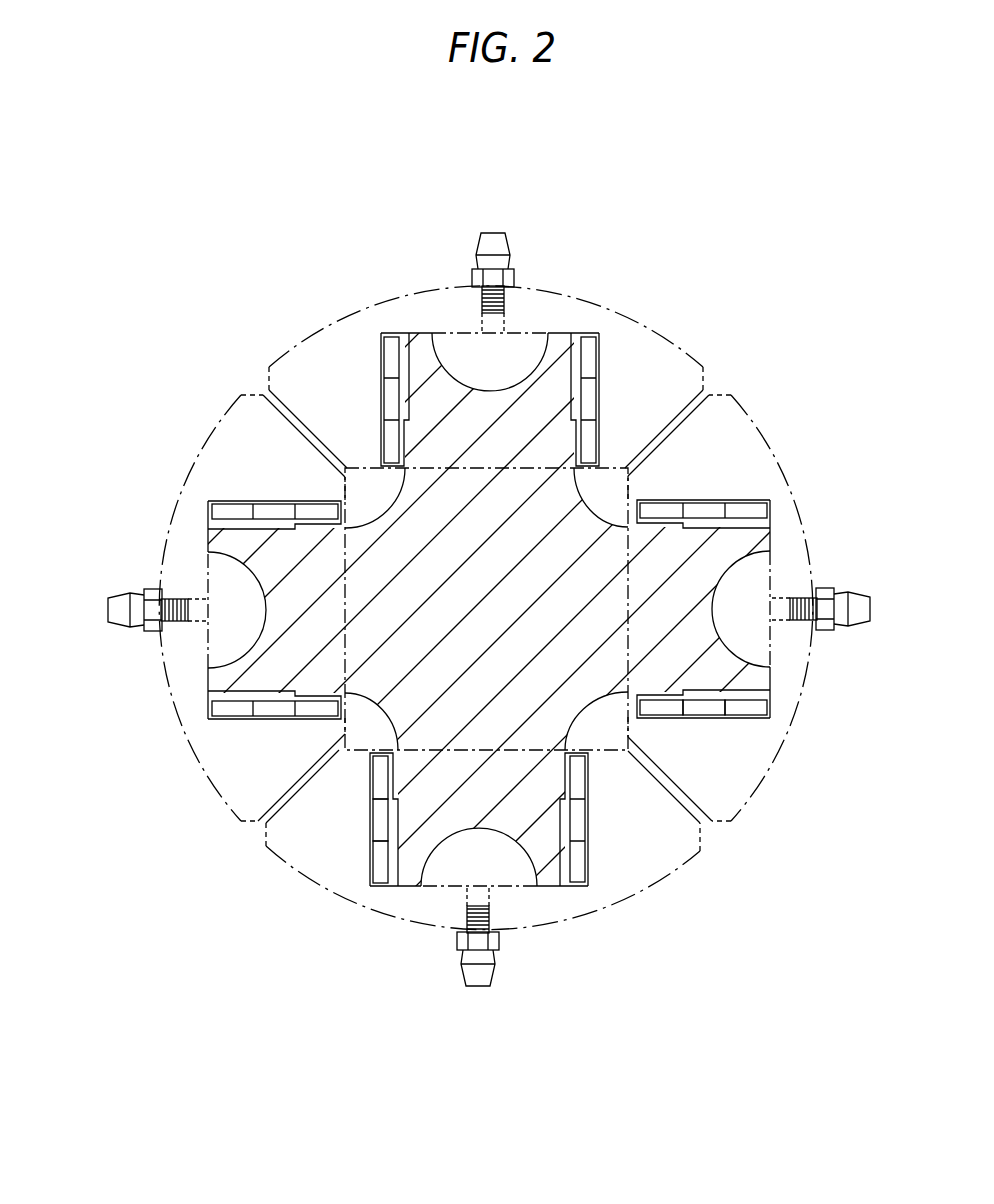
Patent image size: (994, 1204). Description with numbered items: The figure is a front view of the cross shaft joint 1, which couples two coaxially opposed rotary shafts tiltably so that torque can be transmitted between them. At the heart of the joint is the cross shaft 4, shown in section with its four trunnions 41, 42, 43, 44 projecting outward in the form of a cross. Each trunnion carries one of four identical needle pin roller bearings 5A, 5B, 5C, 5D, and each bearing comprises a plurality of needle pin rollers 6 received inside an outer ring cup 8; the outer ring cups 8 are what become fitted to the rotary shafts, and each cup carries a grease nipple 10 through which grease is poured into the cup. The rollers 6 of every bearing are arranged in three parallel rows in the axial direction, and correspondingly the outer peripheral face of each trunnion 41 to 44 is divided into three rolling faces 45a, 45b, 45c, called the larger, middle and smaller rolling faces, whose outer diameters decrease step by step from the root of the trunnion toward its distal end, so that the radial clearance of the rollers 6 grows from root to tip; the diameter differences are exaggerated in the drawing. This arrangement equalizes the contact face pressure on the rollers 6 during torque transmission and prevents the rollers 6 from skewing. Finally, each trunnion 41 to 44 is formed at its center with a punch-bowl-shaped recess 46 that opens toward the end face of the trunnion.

The cross shaft joint 1 is at (292, 334).
The cross shaft 4 is at (583, 498).
The roller bearing 5A is at (805, 494).
The roller bearing 5B is at (180, 486).
The roller bearing 5C is at (648, 321).
The roller bearing 5D is at (292, 883).
The needle pin rollers 6 is at (737, 512).
The outer ring cup 8 is at (396, 316).
The grease nipple 10 is at (493, 233).
The trunnion 41 is at (752, 541).
The trunnion 42 is at (555, 345).
The trunnion 43 is at (218, 676).
The trunnion 44 is at (550, 877).
The larger rolling face 45a is at (666, 698).
The middle rolling face 45b is at (707, 696).
The smaller rolling face 45c is at (756, 710).
The recess 46 is at (446, 357).